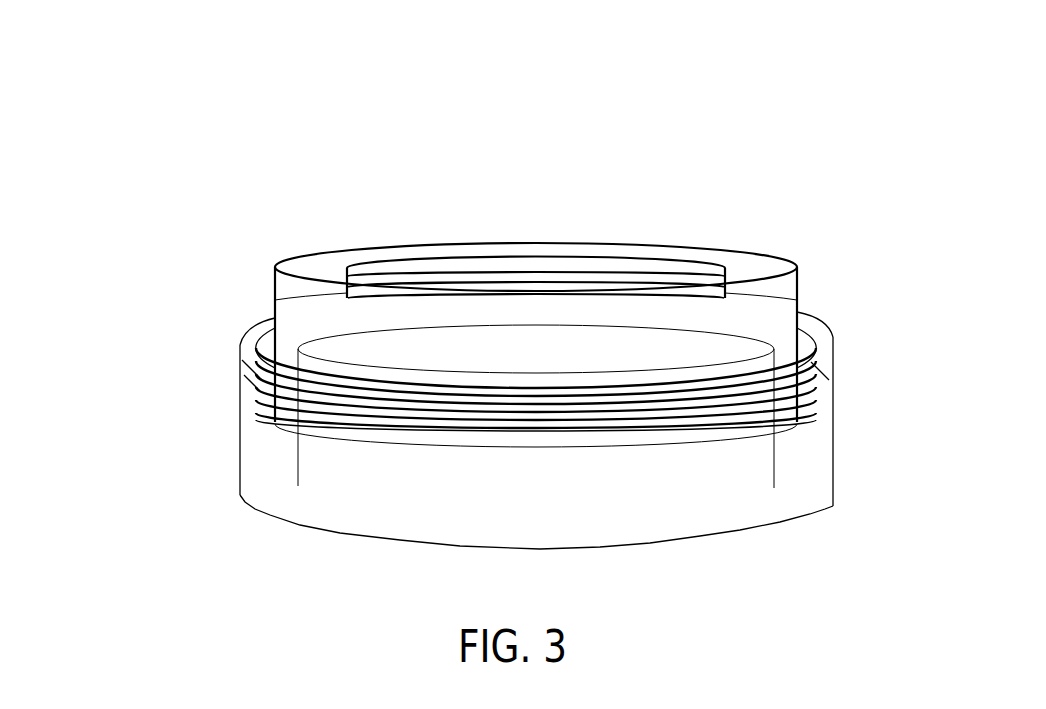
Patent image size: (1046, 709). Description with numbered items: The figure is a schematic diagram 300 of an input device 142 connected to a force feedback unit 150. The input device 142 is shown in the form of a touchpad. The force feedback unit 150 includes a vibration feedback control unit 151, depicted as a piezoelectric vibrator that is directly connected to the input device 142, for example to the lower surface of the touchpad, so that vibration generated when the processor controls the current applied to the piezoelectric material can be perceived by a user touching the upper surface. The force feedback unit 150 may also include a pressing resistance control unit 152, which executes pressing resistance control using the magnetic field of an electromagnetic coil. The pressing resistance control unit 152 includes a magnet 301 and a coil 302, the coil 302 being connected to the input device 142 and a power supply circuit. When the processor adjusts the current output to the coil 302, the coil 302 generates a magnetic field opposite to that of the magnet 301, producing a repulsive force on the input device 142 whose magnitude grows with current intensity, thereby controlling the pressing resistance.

The schematic diagram 300 is at (880, 24).
The force feedback unit 150 is at (110, 277).
The input device 142 is at (823, 260).
The vibration feedback control unit 151 is at (272, 303).
The pressing resistance control unit 152 is at (202, 394).
The magnet 301 is at (293, 437).
The coil 302 is at (242, 413).